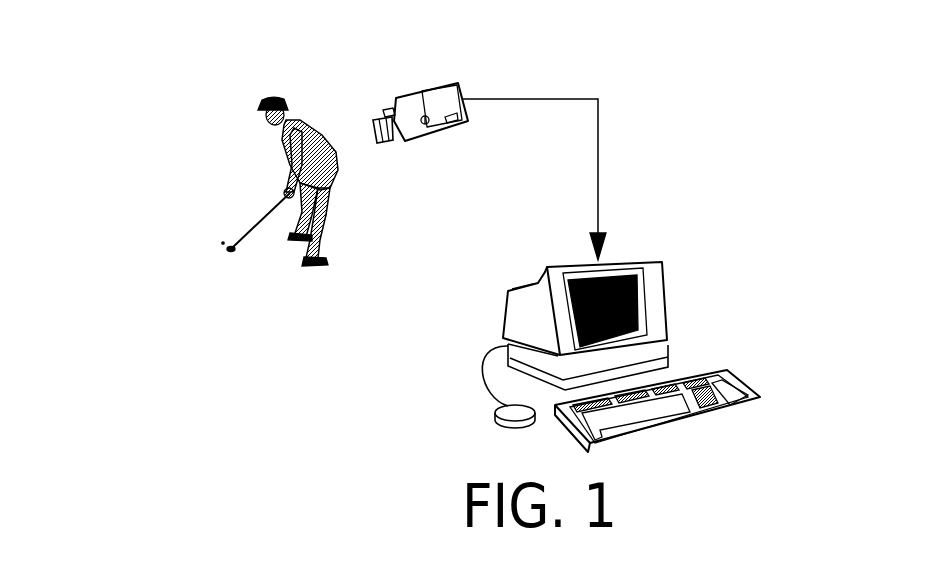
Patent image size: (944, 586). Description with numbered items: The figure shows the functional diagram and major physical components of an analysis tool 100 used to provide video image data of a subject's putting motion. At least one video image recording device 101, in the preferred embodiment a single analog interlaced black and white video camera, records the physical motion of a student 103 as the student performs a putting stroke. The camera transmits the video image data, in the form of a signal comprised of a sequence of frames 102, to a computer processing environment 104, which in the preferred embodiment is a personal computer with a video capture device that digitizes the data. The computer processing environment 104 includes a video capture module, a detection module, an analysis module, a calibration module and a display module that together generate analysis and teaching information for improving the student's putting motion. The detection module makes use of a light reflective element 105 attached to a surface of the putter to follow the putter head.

The analysis tool 100 is at (768, 70).
The video image recording device 101 is at (477, 77).
The video image data signal 102 is at (598, 177).
The student 103 is at (263, 97).
The computer processing environment 104 is at (668, 288).
The light reflective element 105 is at (222, 243).